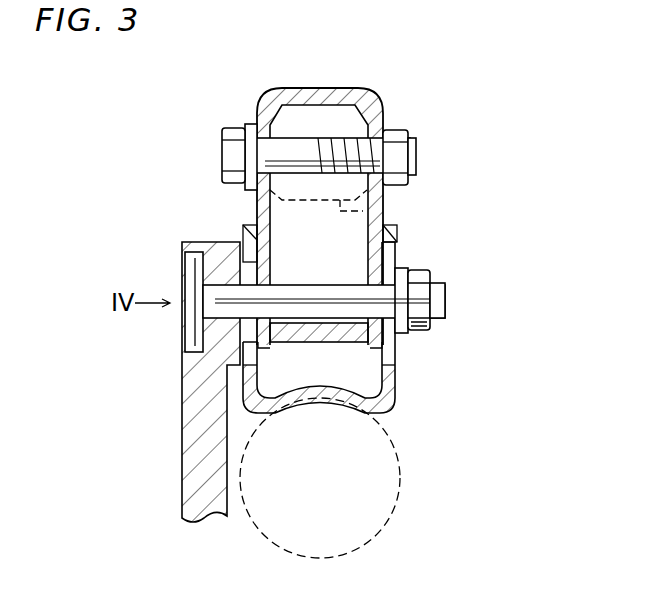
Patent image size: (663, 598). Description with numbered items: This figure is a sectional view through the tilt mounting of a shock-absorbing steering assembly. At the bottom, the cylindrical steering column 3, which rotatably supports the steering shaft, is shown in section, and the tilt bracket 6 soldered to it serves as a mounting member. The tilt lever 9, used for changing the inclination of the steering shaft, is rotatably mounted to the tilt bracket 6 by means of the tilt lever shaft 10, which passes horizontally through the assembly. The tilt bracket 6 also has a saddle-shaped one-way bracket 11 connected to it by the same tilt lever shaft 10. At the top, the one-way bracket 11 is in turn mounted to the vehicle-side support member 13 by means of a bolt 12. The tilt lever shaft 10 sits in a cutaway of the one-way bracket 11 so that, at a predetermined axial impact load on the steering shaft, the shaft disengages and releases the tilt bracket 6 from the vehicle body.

The steering column 3 is at (400, 478).
The tilt bracket 6 is at (396, 383).
The tilt lever 9 is at (182, 473).
The tilt lever shaft 10 is at (213, 307).
The one-way bracket 11 is at (381, 98).
The bolt 12 is at (222, 162).
The vehicle-side support member 13 is at (383, 205).